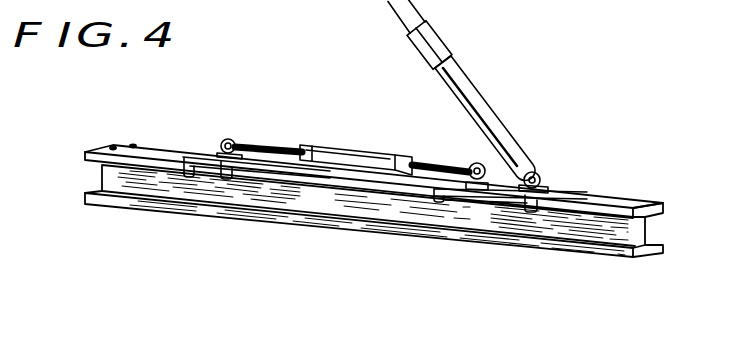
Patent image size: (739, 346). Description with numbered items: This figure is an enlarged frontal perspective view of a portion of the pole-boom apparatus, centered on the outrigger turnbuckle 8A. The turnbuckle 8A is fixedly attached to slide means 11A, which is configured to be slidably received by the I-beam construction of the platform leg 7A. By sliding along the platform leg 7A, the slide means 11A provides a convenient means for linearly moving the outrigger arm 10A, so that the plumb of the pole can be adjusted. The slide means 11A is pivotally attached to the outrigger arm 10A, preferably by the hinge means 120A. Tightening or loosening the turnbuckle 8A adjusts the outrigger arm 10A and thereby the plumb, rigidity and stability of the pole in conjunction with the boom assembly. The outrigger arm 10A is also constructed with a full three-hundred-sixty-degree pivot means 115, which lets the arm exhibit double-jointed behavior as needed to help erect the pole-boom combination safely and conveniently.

The platform leg 7A is at (600, 250).
The slide means 11A is at (219, 156).
The outrigger turnbuckle 8A is at (336, 144).
The outrigger arm 10A is at (493, 108).
The full 360° pivot means 115 is at (437, 43).
The hinge means 120A is at (553, 184).